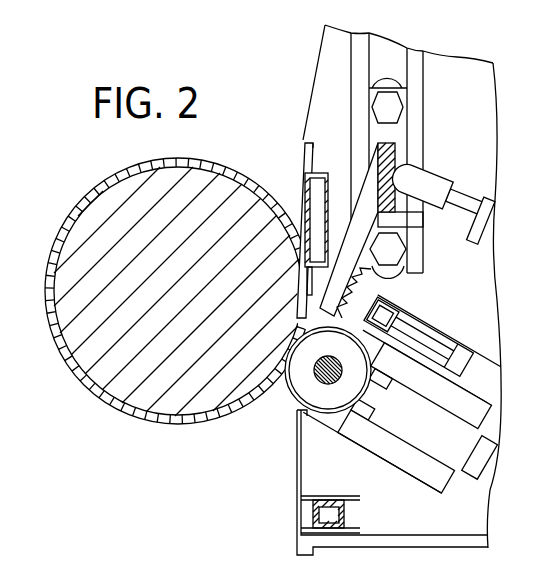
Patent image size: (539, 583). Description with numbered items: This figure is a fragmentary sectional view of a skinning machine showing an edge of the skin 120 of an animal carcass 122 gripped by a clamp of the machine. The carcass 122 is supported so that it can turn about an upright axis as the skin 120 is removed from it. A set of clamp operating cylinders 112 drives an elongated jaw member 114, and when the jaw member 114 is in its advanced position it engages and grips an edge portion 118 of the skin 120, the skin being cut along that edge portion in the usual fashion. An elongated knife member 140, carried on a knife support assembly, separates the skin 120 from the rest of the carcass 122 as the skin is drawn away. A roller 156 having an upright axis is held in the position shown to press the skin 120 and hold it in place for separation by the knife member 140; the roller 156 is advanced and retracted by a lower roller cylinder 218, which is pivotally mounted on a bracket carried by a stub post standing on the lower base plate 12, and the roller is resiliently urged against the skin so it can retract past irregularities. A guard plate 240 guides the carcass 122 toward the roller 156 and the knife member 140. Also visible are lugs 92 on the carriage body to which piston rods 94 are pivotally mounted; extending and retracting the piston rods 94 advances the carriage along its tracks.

The lower base plate 12 is at (322, 97).
The lugs 92 is at (398, 163).
The piston rods 94 is at (467, 198).
The clamp operating cylinders 112 is at (476, 372).
The jaw member 114 is at (383, 296).
The edge portion 118 is at (389, 270).
The skin 120 is at (135, 163).
The carcass 122 is at (186, 187).
The knife member 140 is at (302, 163).
The roller 156 is at (290, 403).
The lower roller cylinder 218 is at (487, 472).
The guard plate 240 is at (297, 486).